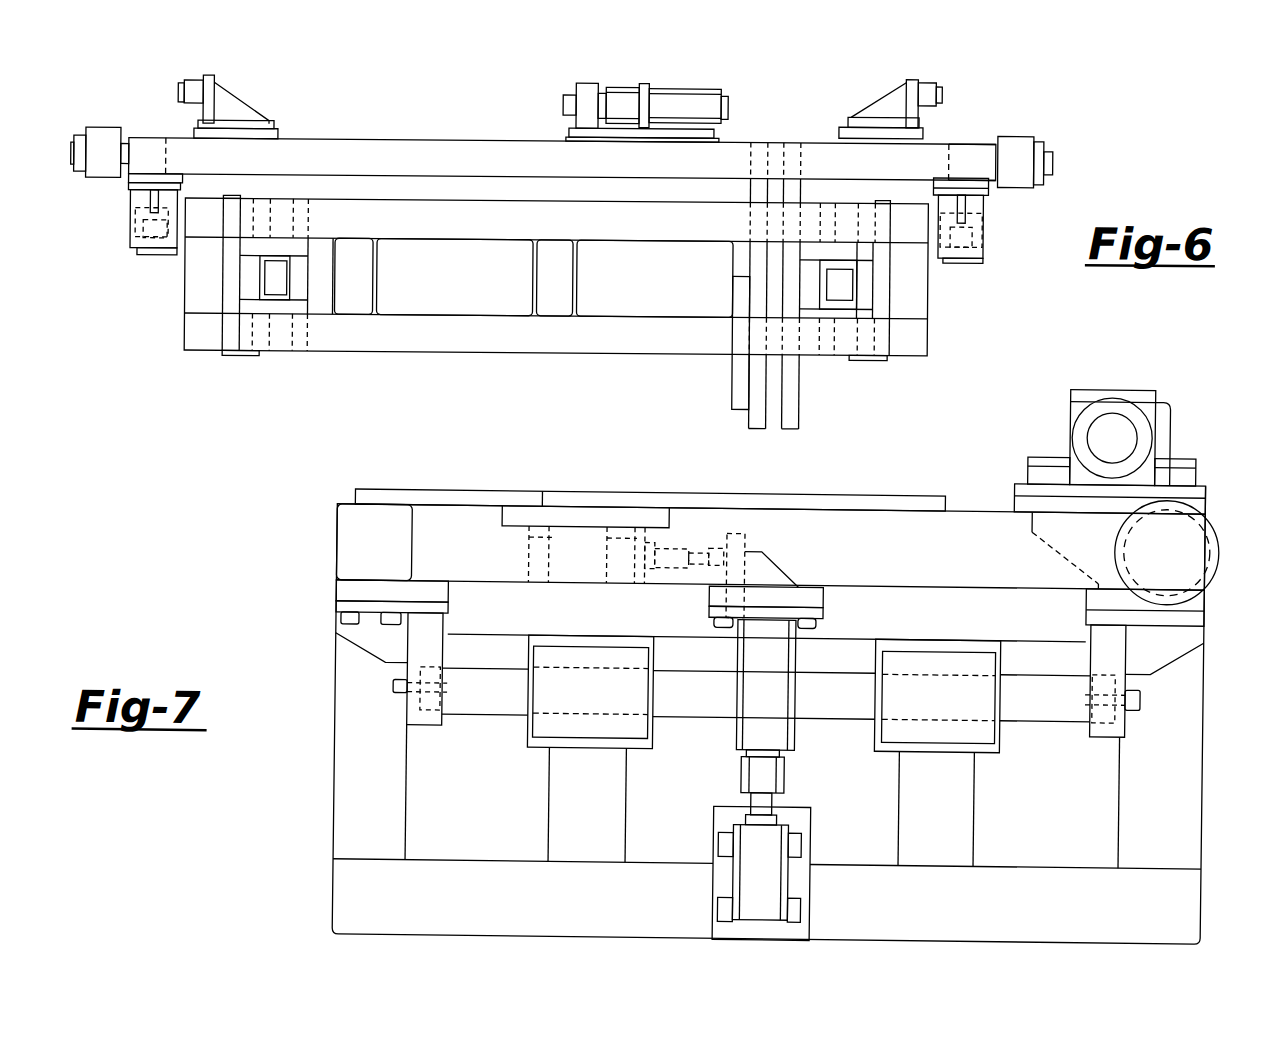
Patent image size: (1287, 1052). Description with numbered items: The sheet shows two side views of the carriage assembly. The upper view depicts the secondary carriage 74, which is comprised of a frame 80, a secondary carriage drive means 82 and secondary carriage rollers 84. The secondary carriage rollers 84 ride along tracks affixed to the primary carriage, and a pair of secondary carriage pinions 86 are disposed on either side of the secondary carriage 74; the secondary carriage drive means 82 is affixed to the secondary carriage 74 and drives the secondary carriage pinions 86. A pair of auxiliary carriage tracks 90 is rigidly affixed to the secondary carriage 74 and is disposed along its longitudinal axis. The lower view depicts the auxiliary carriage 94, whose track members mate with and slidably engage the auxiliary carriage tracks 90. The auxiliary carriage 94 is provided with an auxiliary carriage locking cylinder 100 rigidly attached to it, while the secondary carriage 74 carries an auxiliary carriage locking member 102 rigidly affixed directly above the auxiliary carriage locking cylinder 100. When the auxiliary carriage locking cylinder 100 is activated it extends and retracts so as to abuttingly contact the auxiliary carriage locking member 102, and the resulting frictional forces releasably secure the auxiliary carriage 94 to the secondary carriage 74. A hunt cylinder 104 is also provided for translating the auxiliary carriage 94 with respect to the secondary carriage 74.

In FIG. 6, the secondary carriage 74 is at (950, 136).
In FIG. 7, the secondary carriage 74 is at (356, 532).
In FIG. 6, the frame 80 is at (440, 95).
In FIG. 6, the secondary carriage drive means 82 is at (678, 100).
In FIG. 6, the secondary carriage rollers 84 is at (200, 40).
In FIG. 6, the secondary carriage pinions 86 is at (1013, 160).
In FIG. 6, the auxiliary carriage tracks 90 is at (125, 243).
In FIG. 6, the auxiliary carriage 94 is at (509, 359).
In FIG. 7, the auxiliary carriage 94 is at (1215, 751).
In FIG. 7, the auxiliary carriage locking cylinder 100 is at (748, 877).
In FIG. 7, the auxiliary carriage locking member 102 is at (795, 735).
In FIG. 7, the hunt cylinder 104 is at (577, 547).